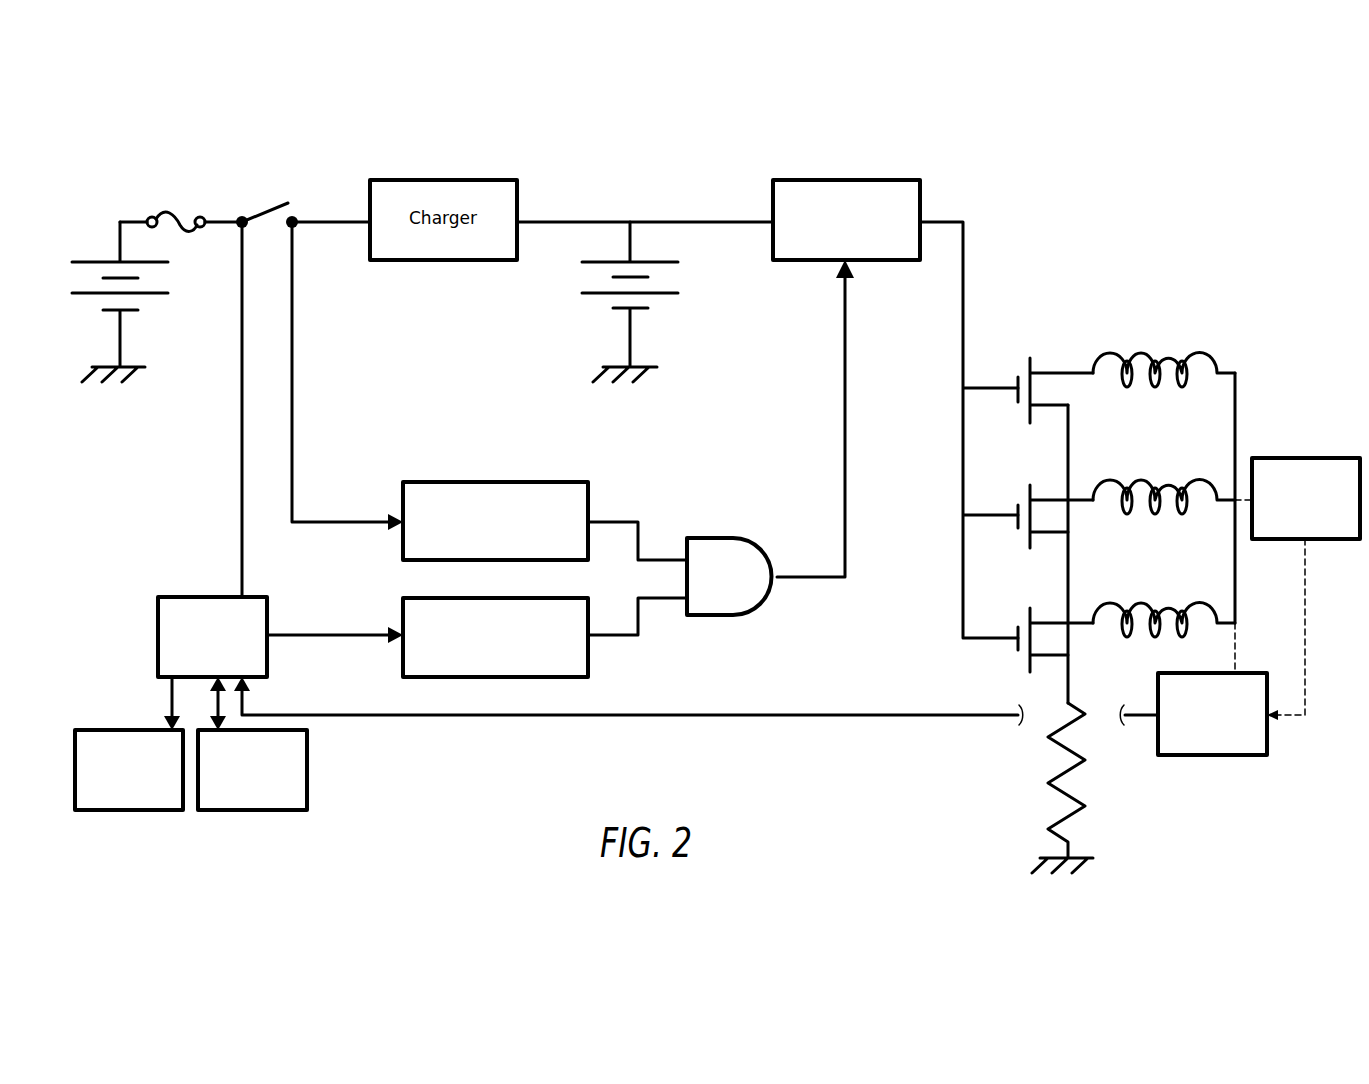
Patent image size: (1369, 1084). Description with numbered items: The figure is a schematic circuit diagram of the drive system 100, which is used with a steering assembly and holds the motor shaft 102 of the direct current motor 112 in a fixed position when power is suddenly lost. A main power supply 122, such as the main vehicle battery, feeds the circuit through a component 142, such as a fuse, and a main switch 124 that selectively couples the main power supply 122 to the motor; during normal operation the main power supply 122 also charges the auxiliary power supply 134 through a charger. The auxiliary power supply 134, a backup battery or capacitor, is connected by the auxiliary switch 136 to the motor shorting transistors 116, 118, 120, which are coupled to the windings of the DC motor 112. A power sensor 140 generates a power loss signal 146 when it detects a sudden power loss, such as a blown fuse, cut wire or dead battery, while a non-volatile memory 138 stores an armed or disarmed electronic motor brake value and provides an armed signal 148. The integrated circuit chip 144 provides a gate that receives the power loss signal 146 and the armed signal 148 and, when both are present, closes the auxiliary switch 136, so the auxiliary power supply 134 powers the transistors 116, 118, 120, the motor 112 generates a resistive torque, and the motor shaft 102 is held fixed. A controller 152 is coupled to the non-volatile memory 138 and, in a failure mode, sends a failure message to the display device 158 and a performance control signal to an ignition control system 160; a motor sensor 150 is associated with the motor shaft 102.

The drive system 100 is at (80, 147).
The motor shaft 102 is at (1300, 458).
The direct current motor 112 is at (1152, 337).
The motor shorting transistor 116 is at (1027, 350).
The motor shorting transistor 118 is at (1028, 473).
The motor shorting transistor 120 is at (1028, 597).
The main power supply 122 is at (175, 277).
The main switch 124 is at (230, 206).
The auxiliary power supply 134 is at (687, 277).
The auxiliary switch 136 is at (920, 200).
The non-volatile memory 138 is at (588, 657).
The power sensor 140 is at (588, 493).
The component 142 is at (147, 206).
The integrated circuit chip 144 is at (770, 600).
The power loss signal 146 is at (638, 535).
The armed signal 148 is at (638, 625).
The motor sensor 150 is at (1267, 732).
The controller 152 is at (175, 597).
The display device 158 is at (158, 810).
The ignition control system 160 is at (282, 810).